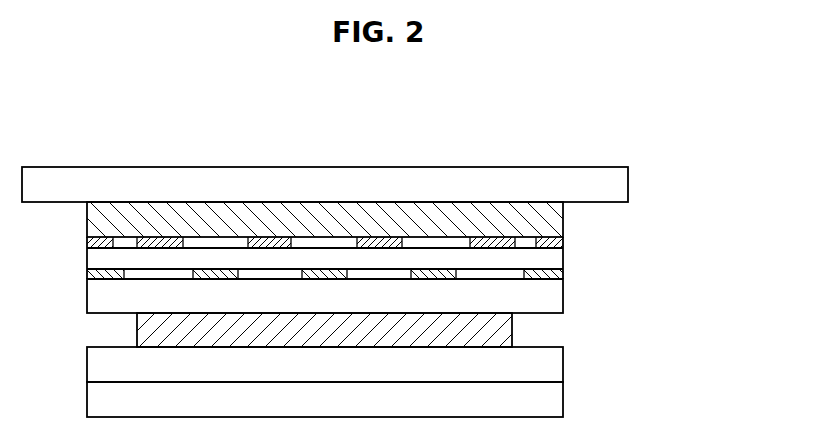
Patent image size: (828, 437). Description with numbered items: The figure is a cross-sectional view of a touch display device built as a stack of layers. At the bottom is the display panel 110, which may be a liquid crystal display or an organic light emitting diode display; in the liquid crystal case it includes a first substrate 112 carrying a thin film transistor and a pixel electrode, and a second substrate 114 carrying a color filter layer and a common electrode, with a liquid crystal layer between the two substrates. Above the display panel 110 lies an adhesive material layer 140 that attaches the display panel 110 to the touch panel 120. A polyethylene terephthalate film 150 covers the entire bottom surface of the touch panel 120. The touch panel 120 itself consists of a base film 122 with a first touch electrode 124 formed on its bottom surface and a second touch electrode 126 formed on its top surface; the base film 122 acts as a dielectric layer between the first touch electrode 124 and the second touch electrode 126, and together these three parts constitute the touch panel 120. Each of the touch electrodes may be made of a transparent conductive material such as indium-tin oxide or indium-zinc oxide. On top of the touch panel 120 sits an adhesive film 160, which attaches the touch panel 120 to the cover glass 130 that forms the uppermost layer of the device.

The display panel 110 is at (675, 367).
The first substrate 112 is at (555, 403).
The second substrate 114 is at (555, 366).
The touch panel 120 is at (677, 220).
The base film 122 is at (557, 257).
The first touch electrode 124 is at (565, 274).
The second touch electrode 126 is at (565, 241).
The cover glass 130 is at (622, 182).
The adhesive material layer 140 is at (508, 329).
The polyethylene terephthalate (PET) film 150 is at (555, 302).
The adhesive film 160 is at (505, 223).